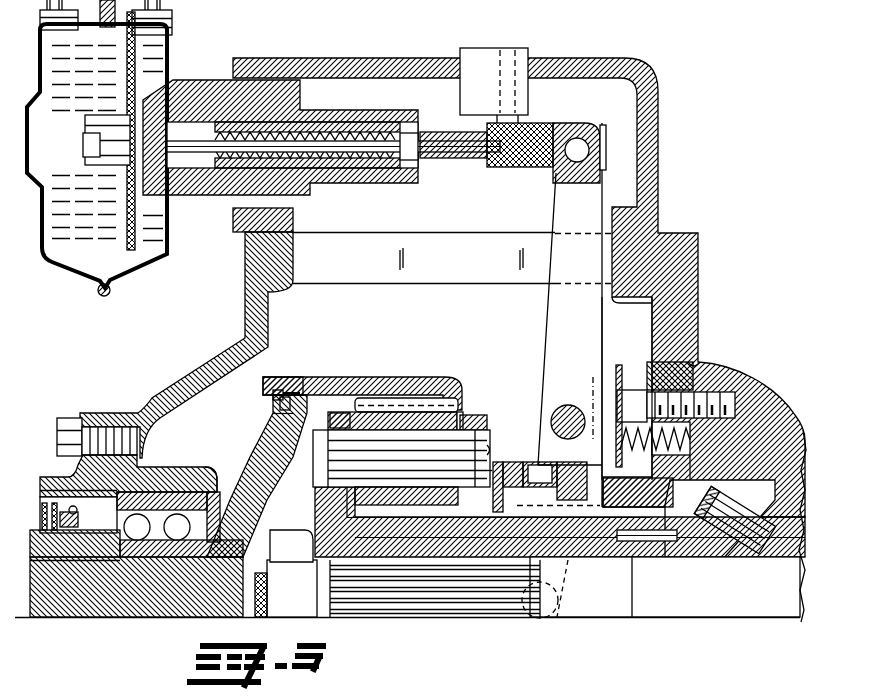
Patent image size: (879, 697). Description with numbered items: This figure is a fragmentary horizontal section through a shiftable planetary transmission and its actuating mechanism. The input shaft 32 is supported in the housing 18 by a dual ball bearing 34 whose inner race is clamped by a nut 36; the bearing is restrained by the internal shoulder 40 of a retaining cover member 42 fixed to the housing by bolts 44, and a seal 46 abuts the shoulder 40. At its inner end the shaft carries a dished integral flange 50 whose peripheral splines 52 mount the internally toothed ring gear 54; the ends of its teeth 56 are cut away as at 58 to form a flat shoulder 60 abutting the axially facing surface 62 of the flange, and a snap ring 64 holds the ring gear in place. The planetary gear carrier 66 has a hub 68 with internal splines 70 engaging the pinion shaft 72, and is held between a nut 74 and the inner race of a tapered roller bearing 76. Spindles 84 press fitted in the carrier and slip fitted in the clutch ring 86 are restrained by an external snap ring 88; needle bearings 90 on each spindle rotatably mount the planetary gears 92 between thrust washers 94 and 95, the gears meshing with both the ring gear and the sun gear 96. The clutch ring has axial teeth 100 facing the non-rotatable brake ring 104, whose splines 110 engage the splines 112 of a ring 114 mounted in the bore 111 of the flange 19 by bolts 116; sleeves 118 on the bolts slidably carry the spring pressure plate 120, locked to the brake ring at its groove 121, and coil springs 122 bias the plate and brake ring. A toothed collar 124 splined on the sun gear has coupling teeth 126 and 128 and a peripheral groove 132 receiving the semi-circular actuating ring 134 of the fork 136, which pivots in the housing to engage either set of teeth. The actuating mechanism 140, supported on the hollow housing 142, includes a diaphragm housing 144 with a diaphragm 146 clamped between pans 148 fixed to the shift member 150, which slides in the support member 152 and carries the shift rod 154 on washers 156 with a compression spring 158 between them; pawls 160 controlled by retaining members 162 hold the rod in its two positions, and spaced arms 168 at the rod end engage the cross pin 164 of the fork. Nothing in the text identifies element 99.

The housing 18 is at (228, 343).
The flange 19 is at (698, 315).
The input shaft 32 is at (108, 594).
The dual ball bearing 34 is at (135, 557).
The nut 36 is at (218, 482).
The integral internal shoulder 40 is at (112, 500).
The retaining cover member 42 is at (60, 477).
The bolts 44 is at (72, 418).
The seal 46 is at (75, 543).
The dished shaped integral flange 50 is at (270, 512).
The peripheral splines 52 is at (315, 376).
The ring gear 54 is at (410, 377).
The teeth 56 is at (360, 397).
The cut away portion 58 is at (272, 400).
The flat abutting shoulder 60 is at (290, 396).
The flat axially facing surface 62 is at (285, 425).
The snap ring 64 is at (278, 394).
The planetary gear carrier 66 is at (315, 525).
The hub 68 is at (574, 560).
The internal splines 70 is at (316, 552).
The pinion shaft 72 is at (695, 612).
The nut 74 is at (298, 610).
The tapered roller bearing 76 is at (733, 555).
The planetary gear spindles 84 is at (410, 466).
The clutch ring 86 is at (472, 414).
The external snap ring 88 is at (313, 485).
The needle bearings 90 is at (438, 500).
The planetary gears 92 is at (430, 426).
The thrust washer 94 is at (352, 428).
The thrust washer 95 is at (459, 430).
The sun gear 96 is at (580, 547).
The joint 99 is at (645, 558).
The teeth 100 is at (484, 455).
The brake ring 104 is at (690, 478).
The splines 110 is at (688, 458).
The bore 111 is at (695, 363).
The splines 112 is at (638, 492).
The ring 114 is at (700, 372).
The bolts 116 is at (728, 395).
The sleeves 118 is at (640, 414).
The spring pressure plate 120 is at (618, 363).
The groove 121 is at (578, 438).
The coil springs 122 is at (690, 438).
The toothed collar 124 is at (497, 460).
The coupling teeth 126 is at (490, 478).
The coupling teeth 128 is at (617, 533).
The peripheral groove 132 is at (552, 465).
The semi-circular actuating ring 134 is at (512, 462).
The fork 136 is at (548, 318).
The actuating mechanism 140 is at (415, 49).
The hollow housing 142 is at (600, 60).
The diaphragm chamber defining housing 144 is at (80, 286).
The diaphragm 146 is at (107, 143).
The pans 148 is at (140, 230).
The shift member 150 is at (185, 80).
The support member 152 is at (232, 226).
The shift rod 154 is at (345, 120).
The washers 156 is at (208, 145).
The compression spring 158 is at (340, 178).
The pawls 160 is at (552, 120).
The retaining members 162 is at (462, 170).
The cross pin 164 is at (555, 170).
The spaced arms 168 is at (606, 132).